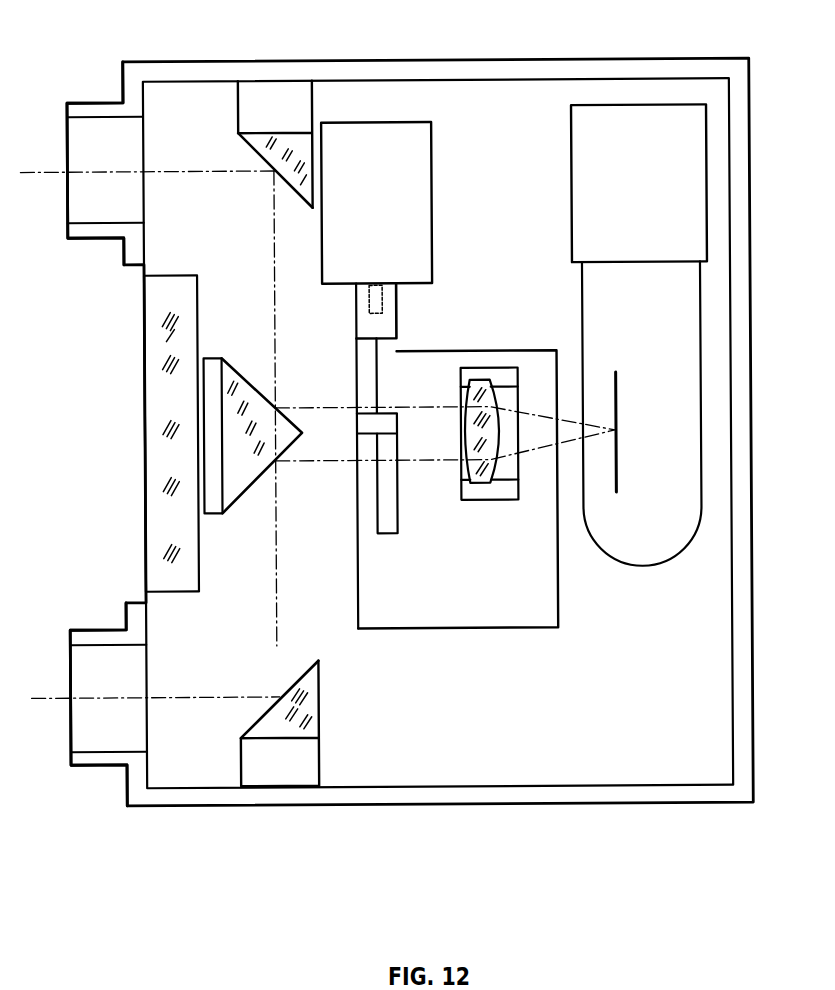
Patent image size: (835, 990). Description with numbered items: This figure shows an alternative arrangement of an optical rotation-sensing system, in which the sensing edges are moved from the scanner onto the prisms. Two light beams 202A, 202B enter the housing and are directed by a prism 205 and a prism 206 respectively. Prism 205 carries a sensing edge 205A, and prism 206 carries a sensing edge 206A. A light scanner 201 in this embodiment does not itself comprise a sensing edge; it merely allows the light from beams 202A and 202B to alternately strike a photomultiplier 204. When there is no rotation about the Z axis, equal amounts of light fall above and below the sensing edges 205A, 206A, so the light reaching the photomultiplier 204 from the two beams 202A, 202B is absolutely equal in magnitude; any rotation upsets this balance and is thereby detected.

The light scanner 201 is at (385, 522).
The light beam 202A is at (88, 698).
The light beam 202B is at (117, 172).
The photomultiplier 204 is at (655, 325).
The prism 205 is at (288, 769).
The sensing edge 205A is at (285, 668).
The prism 206 is at (295, 109).
The sensing edge 206A is at (254, 157).